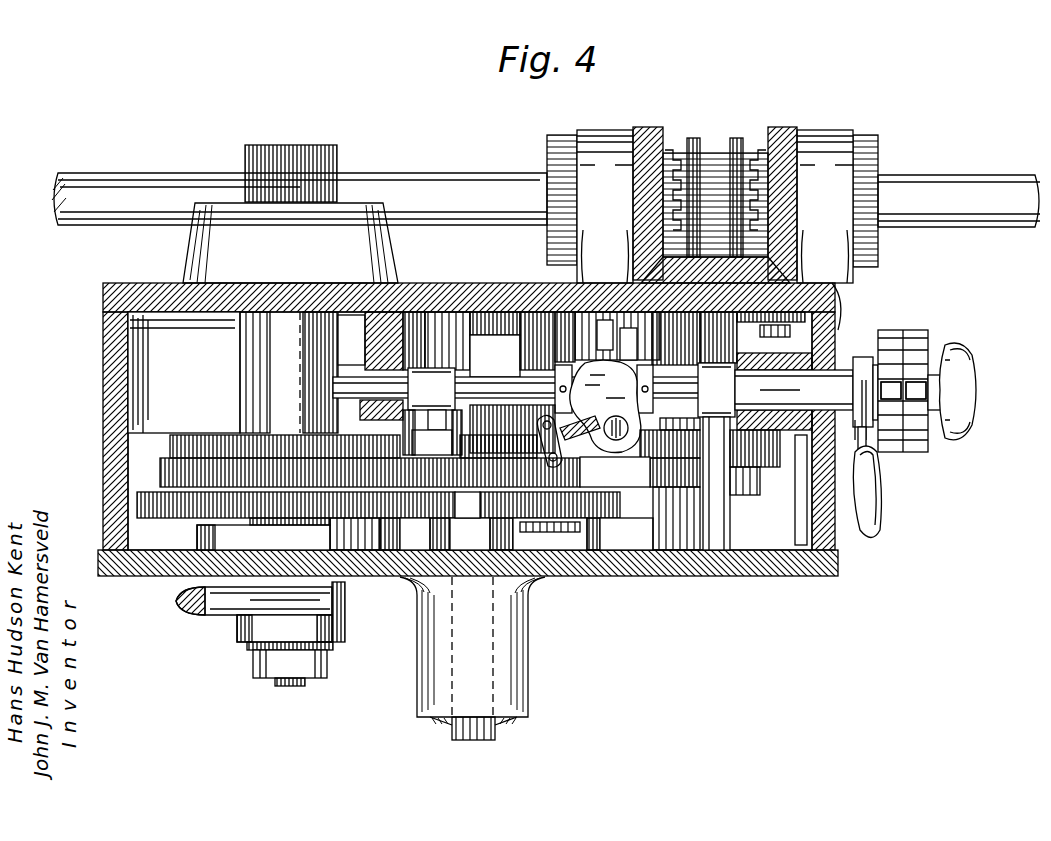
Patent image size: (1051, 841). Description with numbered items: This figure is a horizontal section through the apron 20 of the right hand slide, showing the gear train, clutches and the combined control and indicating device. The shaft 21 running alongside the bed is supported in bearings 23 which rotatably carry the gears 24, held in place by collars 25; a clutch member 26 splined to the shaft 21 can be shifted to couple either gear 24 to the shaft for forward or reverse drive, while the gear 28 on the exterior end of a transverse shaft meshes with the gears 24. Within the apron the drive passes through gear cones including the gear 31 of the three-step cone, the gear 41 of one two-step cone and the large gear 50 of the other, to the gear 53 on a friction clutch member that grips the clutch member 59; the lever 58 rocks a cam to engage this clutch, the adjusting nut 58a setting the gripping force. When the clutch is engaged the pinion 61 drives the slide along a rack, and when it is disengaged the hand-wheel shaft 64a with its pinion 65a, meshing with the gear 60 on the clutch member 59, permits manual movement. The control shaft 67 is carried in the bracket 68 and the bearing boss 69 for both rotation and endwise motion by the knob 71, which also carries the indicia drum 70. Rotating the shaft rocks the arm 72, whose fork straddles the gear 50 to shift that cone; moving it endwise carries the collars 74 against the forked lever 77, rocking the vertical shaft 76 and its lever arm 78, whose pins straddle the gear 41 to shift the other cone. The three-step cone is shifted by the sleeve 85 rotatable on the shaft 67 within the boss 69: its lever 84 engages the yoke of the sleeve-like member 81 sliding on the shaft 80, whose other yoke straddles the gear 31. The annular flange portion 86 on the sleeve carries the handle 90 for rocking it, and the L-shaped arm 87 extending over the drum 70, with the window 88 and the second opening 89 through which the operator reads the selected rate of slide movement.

The apron 20 is at (620, 570).
The shaft 21 is at (440, 175).
The bearings 23 is at (610, 135).
The gears 24 is at (650, 130).
The collars 25 is at (560, 135).
The clutch member 26 is at (697, 140).
The gear 28 is at (712, 255).
The gear 31 is at (800, 450).
The gear 41 is at (465, 462).
The gear 50 is at (500, 410).
The gear 53 is at (150, 505).
The lever 58 is at (220, 605).
The adjusting nut 58a is at (325, 670).
The clutch member 59 is at (250, 375).
The gear 60 is at (168, 470).
The pinion 61 is at (300, 145).
The shaft 64a is at (445, 735).
The pinion 65a is at (452, 505).
The shaft 67 is at (480, 385).
The bracket 68 is at (335, 370).
The bearing boss 69 is at (773, 365).
The drum 70 is at (920, 332).
The knob 71 is at (975, 352).
The arm 72 is at (432, 411).
The collars 74 is at (578, 372).
The shaft 76 is at (625, 447).
The forked lever 77 is at (605, 406).
The lever arm 78 is at (570, 458).
The shaft 80 is at (720, 505).
The sleeve-like member 81 is at (720, 452).
The lever 84 is at (716, 390).
The sleeve 85 is at (794, 390).
The annular flange portion 86 is at (855, 375).
The L-shaped arm 87 is at (857, 357).
The window 88 is at (925, 400).
The second opening 89 is at (893, 400).
The handle 90 is at (880, 520).